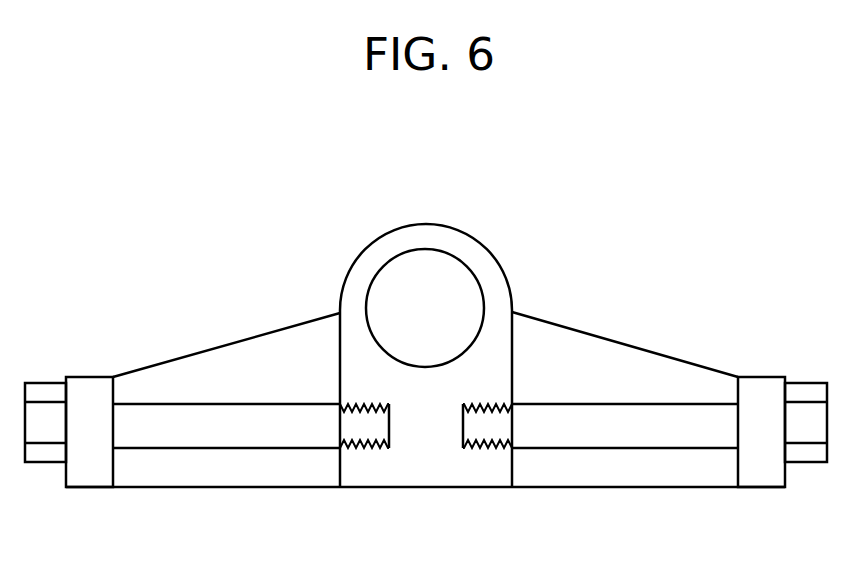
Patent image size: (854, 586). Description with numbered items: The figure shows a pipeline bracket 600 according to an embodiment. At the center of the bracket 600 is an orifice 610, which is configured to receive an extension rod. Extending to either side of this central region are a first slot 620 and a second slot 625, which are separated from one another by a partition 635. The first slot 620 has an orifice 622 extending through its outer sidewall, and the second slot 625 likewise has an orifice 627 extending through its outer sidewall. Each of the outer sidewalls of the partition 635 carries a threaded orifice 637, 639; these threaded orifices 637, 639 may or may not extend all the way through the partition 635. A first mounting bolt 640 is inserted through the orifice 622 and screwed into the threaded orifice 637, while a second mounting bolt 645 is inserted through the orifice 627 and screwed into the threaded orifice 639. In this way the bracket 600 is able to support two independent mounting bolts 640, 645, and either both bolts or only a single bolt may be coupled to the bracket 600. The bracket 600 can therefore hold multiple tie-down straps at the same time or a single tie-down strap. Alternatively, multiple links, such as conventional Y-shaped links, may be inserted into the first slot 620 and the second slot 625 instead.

The pipeline bracket 600 is at (190, 244).
The orifice 610 is at (446, 278).
The first slot 620 is at (209, 474).
The orifice 622 is at (90, 472).
The second slot 625 is at (633, 477).
The orifice 627 is at (759, 470).
The partition 635 is at (437, 462).
The threaded orifice 637 is at (368, 430).
The threaded orifice 639 is at (492, 430).
The first mounting bolt 640 is at (184, 418).
The second mounting bolt 645 is at (617, 422).